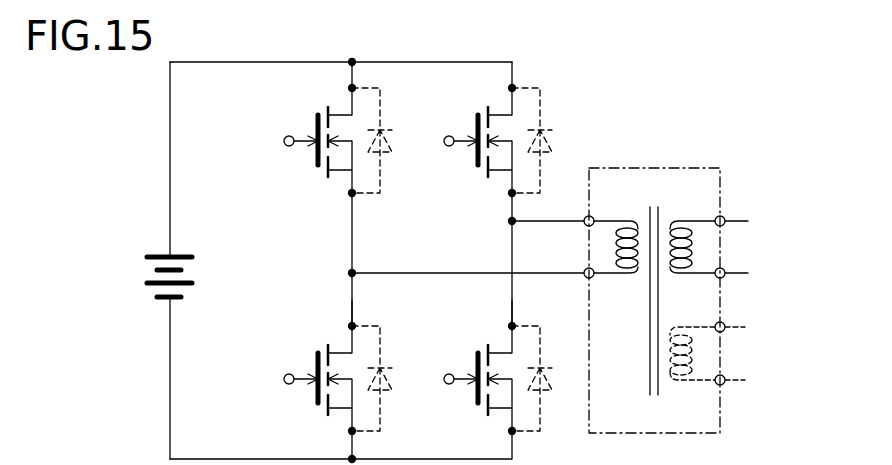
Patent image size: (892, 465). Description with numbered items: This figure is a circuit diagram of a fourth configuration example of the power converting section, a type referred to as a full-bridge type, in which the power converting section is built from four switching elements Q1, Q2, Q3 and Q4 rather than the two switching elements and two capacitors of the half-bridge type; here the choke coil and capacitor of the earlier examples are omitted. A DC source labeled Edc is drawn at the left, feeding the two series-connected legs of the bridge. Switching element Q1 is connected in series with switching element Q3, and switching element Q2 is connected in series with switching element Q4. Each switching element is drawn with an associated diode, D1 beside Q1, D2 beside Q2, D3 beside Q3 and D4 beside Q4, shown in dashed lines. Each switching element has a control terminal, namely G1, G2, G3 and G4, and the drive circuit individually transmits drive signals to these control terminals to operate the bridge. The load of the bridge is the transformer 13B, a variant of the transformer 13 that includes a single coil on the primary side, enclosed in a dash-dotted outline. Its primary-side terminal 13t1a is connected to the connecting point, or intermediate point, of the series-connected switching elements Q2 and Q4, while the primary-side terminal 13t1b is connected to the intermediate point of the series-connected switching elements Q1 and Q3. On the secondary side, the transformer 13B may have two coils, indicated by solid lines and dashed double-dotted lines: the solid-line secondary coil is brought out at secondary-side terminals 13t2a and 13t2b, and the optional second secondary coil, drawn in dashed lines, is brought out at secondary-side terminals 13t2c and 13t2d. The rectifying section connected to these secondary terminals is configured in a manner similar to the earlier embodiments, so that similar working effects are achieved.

The DC power supply Edc is at (150, 260).
The switching element Q1 is at (326, 129).
The switching element Q2 is at (486, 129).
The switching element Q3 is at (326, 367).
The switching element Q4 is at (486, 367).
The diode D1 is at (386, 140).
The diode D2 is at (546, 140).
The diode D3 is at (386, 378).
The diode D4 is at (546, 378).
The control terminal G1 is at (285, 144).
The control terminal G2 is at (441, 162).
The control terminal G3 is at (281, 400).
The control terminal G4 is at (441, 400).
The transformer 13B is at (643, 168).
The transformer 13 is at (672, 277).
The primary-side terminal 13t1a is at (585, 226).
The primary-side terminal 13t1b is at (585, 278).
The secondary terminal 13t2a is at (724, 217).
The secondary terminal 13t2b is at (724, 269).
The secondary terminal 13t2c is at (724, 331).
The secondary terminal 13t2d is at (724, 384).